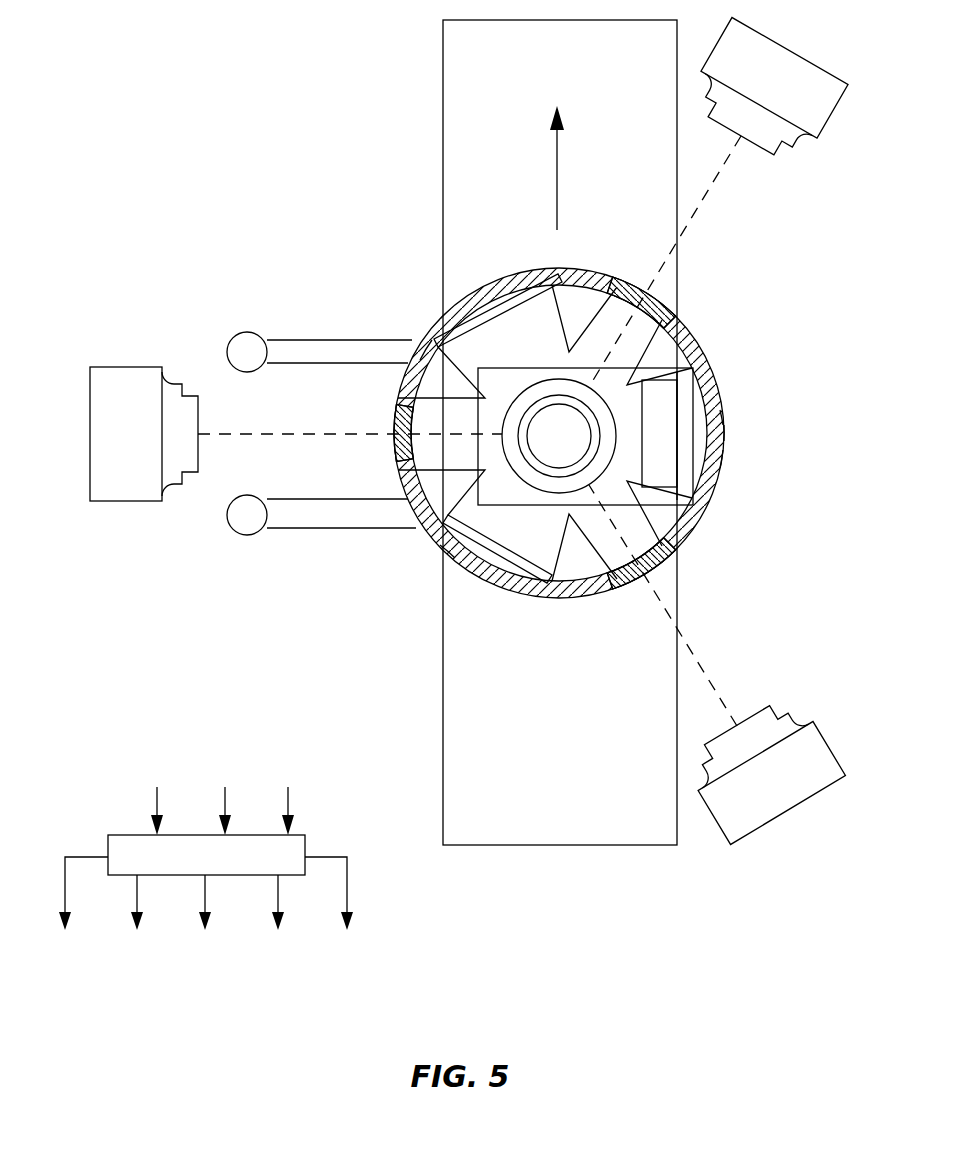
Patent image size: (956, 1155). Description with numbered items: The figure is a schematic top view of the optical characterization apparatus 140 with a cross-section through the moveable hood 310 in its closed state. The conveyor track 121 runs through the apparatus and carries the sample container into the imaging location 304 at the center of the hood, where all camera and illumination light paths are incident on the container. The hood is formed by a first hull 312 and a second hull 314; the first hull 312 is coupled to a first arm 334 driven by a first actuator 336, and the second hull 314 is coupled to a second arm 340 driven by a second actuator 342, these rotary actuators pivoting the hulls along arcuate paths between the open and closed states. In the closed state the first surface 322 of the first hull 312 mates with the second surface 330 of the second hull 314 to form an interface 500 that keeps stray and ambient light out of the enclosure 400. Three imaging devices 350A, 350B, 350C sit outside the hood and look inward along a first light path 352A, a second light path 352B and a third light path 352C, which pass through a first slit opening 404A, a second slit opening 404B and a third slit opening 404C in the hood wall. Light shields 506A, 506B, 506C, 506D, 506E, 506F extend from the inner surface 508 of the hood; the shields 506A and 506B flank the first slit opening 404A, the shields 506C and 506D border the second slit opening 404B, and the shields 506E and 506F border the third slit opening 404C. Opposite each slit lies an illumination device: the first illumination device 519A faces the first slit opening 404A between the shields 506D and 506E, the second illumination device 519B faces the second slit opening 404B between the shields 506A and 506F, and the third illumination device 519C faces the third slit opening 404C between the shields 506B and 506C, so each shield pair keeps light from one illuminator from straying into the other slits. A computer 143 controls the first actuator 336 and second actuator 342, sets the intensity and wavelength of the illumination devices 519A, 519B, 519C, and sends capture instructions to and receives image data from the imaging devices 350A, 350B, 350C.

The conveyor track 121 is at (533, 81).
The optical characterization apparatus 140 is at (340, 154).
The computer 143 is at (128, 835).
The imaging location 304 is at (517, 491).
The moveable hood 310 is at (543, 609).
The first hull 312 is at (484, 267).
The second hull 314 is at (700, 555).
The first surface 322 is at (720, 467).
The second surface 330 is at (722, 425).
The first arm 334 is at (308, 340).
The first actuator 336 is at (247, 333).
The second arm 340 is at (300, 528).
The second actuator 342 is at (247, 535).
The first imaging device 350A is at (96, 446).
The second imaging device 350B is at (750, 87).
The third imaging device 350C is at (751, 791).
The first light path 352A is at (305, 432).
The second light path 352B is at (704, 194).
The third light path 352C is at (712, 685).
The enclosure 400 is at (445, 545).
The first slit opening 404A is at (397, 452).
The second slit opening 404B is at (663, 295).
The third slit opening 404C is at (660, 565).
The interface 500 is at (737, 440).
The light shield 506A is at (433, 477).
The light shield 506B is at (405, 382).
The light shield 506C is at (570, 305).
The light shield 506D is at (660, 357).
The light shield 506E is at (688, 522).
The light shield 506F is at (585, 597).
The inner surface 508 is at (432, 374).
The first illumination device 519A is at (695, 406).
The second illumination device 519B is at (510, 553).
The third illumination device 519C is at (490, 318).